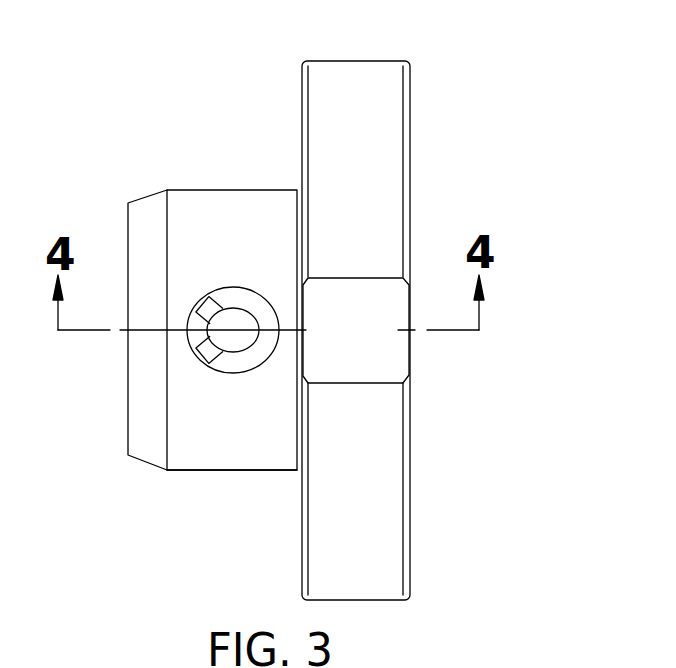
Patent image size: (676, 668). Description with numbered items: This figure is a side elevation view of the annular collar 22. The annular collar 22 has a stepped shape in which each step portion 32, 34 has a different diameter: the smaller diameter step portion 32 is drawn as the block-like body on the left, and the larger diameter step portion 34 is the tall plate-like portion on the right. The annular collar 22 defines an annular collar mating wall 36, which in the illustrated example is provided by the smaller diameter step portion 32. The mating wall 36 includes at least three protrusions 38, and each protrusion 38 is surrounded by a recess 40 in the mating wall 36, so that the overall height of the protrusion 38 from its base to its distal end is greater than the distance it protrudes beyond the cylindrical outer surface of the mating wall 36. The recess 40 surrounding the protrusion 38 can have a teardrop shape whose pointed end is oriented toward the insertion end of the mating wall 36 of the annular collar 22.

The annular collar 22 is at (311, 304).
The smaller diameter step portion 32 is at (229, 178).
The larger diameter step portion 34 is at (352, 50).
The annular collar mating wall 36 is at (233, 460).
The protrusion 38 is at (237, 330).
The recess 40 is at (233, 362).